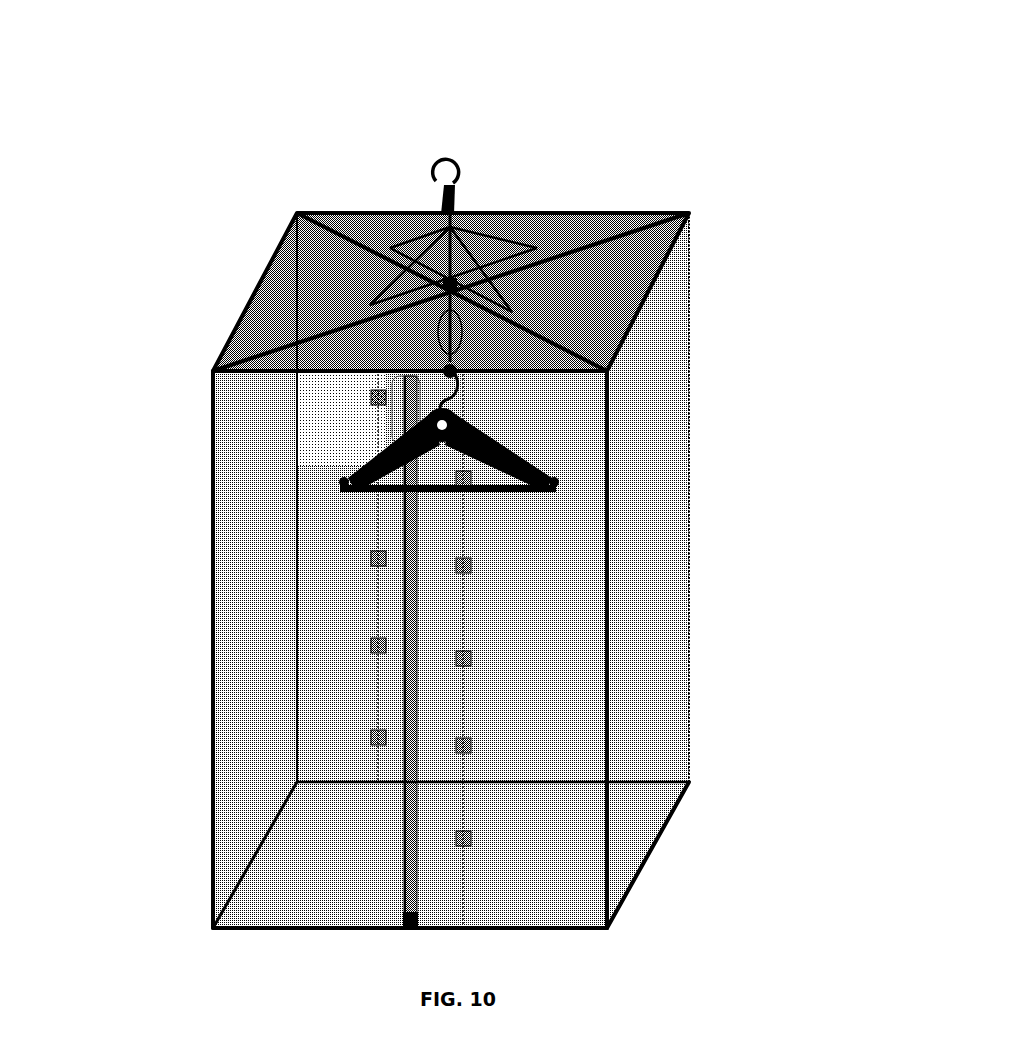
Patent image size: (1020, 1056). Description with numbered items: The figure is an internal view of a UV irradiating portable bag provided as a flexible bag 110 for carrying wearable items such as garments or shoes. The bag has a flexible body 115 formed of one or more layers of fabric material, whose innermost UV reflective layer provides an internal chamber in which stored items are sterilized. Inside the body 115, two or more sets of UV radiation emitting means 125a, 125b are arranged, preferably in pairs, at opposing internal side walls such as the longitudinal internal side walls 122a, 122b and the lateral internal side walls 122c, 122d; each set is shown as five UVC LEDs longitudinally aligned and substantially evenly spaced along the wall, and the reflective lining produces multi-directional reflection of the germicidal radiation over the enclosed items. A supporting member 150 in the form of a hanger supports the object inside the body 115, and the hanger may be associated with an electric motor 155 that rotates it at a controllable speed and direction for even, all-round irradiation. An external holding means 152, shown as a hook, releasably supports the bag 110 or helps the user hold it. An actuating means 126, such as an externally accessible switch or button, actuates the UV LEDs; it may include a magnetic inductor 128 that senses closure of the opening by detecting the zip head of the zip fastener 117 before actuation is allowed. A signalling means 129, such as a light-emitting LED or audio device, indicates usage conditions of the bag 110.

The flexible bag 110 is at (224, 186).
The flexible body 115 is at (655, 506).
The zip fastener 117 is at (418, 882).
The longitudinal internal side wall 122a is at (291, 892).
The longitudinal internal side wall 122b is at (587, 540).
The lateral internal side wall 122c is at (263, 608).
The lateral internal side wall 122d is at (670, 693).
The UV radiation emitting means 125a is at (469, 482).
The UV radiation emitting means 125b is at (372, 735).
The actuating means 126 is at (473, 417).
The magnetic inductor 128 is at (392, 431).
The signalling means 129 is at (467, 367).
The supporting member 150 is at (490, 440).
The external holding means 152 is at (463, 165).
The electric motor 155 is at (465, 332).